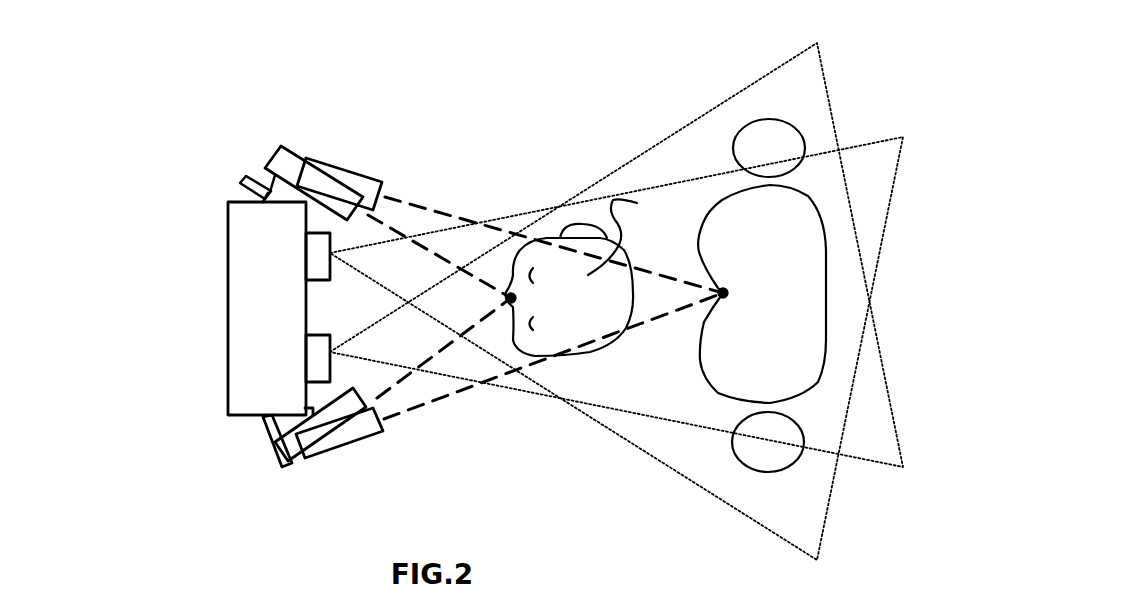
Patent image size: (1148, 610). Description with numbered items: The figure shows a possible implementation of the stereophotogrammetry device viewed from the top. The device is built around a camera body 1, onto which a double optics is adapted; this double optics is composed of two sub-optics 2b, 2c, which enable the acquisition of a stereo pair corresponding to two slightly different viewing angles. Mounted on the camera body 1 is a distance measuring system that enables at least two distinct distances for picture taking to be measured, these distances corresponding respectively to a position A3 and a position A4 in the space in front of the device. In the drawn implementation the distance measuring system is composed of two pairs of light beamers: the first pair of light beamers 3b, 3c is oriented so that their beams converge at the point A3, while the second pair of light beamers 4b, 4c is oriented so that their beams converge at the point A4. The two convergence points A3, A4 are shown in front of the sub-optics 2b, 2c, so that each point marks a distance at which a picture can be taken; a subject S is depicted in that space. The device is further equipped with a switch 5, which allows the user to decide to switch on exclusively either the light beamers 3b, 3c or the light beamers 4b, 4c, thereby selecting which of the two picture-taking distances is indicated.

The camera body 1 is at (240, 340).
The sub-optic 2b is at (318, 253).
The sub-optic 2c is at (318, 353).
The light beamer 3b is at (363, 177).
The light beamer 3c is at (353, 432).
The light beamer 4b is at (305, 158).
The light beamer 4c is at (295, 445).
The switch 5 is at (240, 188).
The position A4 is at (508, 297).
The position A3 is at (720, 295).
The subject S is at (735, 233).